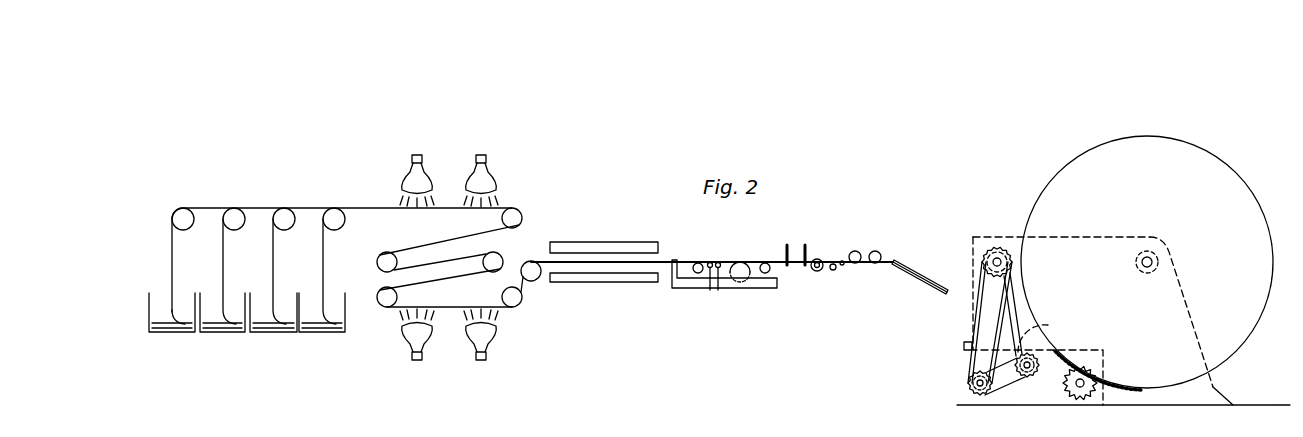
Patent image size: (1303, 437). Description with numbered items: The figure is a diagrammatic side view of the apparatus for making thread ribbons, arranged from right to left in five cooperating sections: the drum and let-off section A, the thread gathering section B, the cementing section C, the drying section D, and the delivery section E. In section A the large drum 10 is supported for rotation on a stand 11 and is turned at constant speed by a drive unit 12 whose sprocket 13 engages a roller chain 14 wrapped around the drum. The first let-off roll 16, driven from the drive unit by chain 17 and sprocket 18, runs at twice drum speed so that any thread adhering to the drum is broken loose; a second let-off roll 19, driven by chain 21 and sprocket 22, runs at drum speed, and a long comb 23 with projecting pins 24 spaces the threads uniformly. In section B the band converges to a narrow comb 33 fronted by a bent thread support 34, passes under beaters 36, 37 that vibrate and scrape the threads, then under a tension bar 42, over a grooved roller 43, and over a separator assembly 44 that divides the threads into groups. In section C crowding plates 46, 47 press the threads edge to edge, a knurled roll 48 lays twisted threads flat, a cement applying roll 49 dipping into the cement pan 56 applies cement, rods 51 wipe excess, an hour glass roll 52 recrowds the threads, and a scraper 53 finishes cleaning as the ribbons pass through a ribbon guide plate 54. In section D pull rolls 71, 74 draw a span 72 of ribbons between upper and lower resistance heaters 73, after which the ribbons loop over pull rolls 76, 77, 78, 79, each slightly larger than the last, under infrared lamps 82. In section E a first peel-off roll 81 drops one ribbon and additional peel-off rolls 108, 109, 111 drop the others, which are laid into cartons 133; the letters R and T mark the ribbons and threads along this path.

The drum 10 is at (1217, 177).
The stand 11 is at (1213, 387).
The drive unit 12 is at (1053, 397).
The sprocket 13 is at (1087, 398).
The roller chain 14 is at (1133, 385).
The first let-off roll 16 is at (1007, 247).
The chain 17 is at (980, 313).
The sprocket 18 is at (985, 283).
The second let-off roll 19 is at (1040, 353).
The chain 21 is at (1000, 396).
The sprocket 22 is at (1040, 322).
The long comb 23 is at (964, 346).
The projecting pins 24 is at (968, 353).
The narrow comb 33 is at (897, 260).
The bent thread support 34 is at (918, 282).
The beater 36 is at (878, 252).
The beater 37 is at (860, 252).
The tension bar 42 is at (843, 261).
The grooved roller 43 is at (836, 268).
The separator assembly 44 is at (819, 272).
The crowding plate 46 is at (805, 245).
The crowding plate 47 is at (787, 245).
The knurled roll 48 is at (765, 251).
The cement applying roll 49 is at (766, 274).
The rods 51 is at (718, 290).
The hour glass roll 52 is at (700, 274).
The scraper 53 is at (692, 262).
The ribbon guide plate 54 is at (660, 280).
The cement pan 56 is at (750, 282).
The pull roll 71 is at (536, 278).
The span 72 is at (598, 265).
The resistance heaters 73 is at (623, 244).
The pull roll 74 is at (519, 304).
The pull roll 76 is at (388, 306).
The pull roll 77 is at (497, 258).
The pull roll 78 is at (385, 258).
The pull roll 79 is at (512, 208).
The first peel-off roll 81 is at (333, 216).
The infrared lamps 82 is at (420, 178).
The peel-off roll 108 is at (283, 226).
The peel-off roll 109 is at (233, 216).
The peel-off roll 111 is at (182, 226).
The cartons 133 is at (300, 312).
The drum and let-off section A is at (1048, 163).
The thread gathering section B is at (852, 225).
The cementing section C is at (722, 245).
The drying section D is at (553, 218).
The delivery section E is at (273, 190).
The web strand R is at (226, 266).
The tape T is at (946, 294).